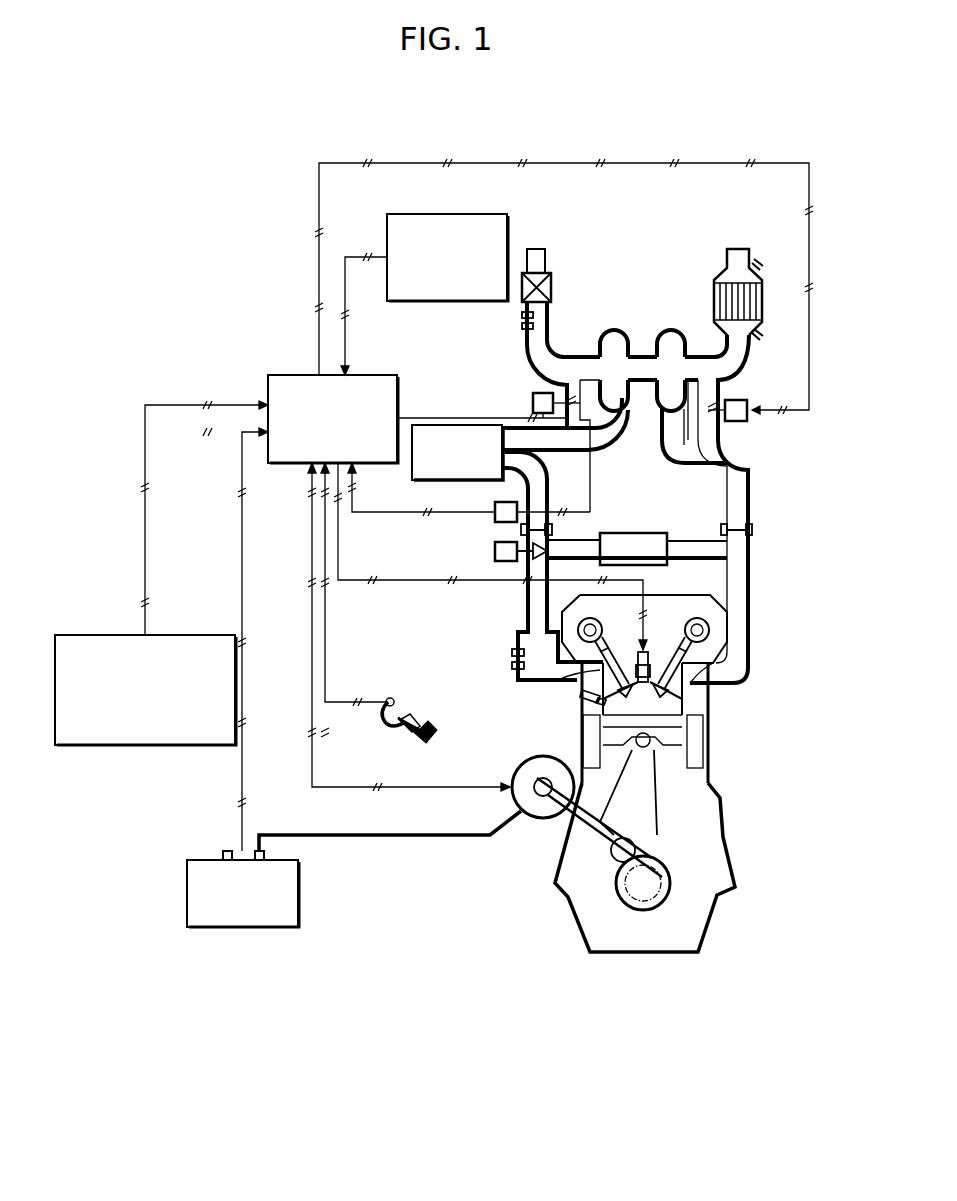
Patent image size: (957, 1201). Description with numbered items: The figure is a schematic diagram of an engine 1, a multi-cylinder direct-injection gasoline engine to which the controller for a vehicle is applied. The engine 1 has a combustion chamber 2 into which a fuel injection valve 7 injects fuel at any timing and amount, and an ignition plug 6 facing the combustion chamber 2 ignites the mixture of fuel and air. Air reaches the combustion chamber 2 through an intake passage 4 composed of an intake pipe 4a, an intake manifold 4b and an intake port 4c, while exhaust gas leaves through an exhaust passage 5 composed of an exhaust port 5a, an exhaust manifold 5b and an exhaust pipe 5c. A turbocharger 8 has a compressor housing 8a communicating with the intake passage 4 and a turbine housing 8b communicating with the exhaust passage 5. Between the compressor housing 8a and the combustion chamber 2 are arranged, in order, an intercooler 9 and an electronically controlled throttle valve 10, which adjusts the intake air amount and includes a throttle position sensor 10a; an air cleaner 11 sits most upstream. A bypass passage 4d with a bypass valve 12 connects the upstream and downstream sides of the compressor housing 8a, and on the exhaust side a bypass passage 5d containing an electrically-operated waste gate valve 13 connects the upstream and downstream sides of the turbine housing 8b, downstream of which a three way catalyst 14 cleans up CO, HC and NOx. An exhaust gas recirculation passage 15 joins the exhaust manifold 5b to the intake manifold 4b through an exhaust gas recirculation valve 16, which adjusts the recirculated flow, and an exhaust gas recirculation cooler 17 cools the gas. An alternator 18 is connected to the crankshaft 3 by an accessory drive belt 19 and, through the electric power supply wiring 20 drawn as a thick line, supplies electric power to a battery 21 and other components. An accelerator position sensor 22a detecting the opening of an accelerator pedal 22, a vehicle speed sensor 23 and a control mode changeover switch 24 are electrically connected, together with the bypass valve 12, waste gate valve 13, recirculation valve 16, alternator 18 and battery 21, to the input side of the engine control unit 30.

The engine 1 is at (797, 142).
The combustion chamber 2 is at (641, 713).
The crankshaft 3 is at (645, 885).
The intake passage 4 is at (522, 608).
The intake pipe 4a is at (549, 325).
The intake manifold 4b is at (516, 670).
The intake port 4c is at (592, 672).
The bypass passage 4d is at (558, 388).
The exhaust passage 5 is at (752, 632).
The exhaust port 5a is at (692, 678).
The exhaust manifold 5b is at (752, 580).
The exhaust pipe 5c is at (753, 345).
The bypass passage 5d is at (700, 428).
The ignition plug 6 is at (651, 640).
The fuel injection valve 7 is at (580, 702).
The turbocharger 8 is at (642, 354).
The compressor housing 8a is at (612, 328).
The turbine housing 8b is at (670, 328).
The intercooler 9 is at (412, 470).
The electronically controlled throttle valve 10 is at (541, 518).
The throttle position sensor 10a is at (495, 514).
The air cleaner 11 is at (552, 277).
The bypass valve 12 is at (533, 403).
The electrically-operated waste gate valve 13 is at (742, 400).
The three way catalyst 14 is at (760, 297).
The exhaust gas recirculation passage 15 is at (686, 540).
The exhaust gas recirculation valve 16 is at (495, 552).
The exhaust gas recirculation cooler 17 is at (660, 533).
The alternator 18 is at (518, 765).
The accessory drive belt 19 is at (575, 838).
The electric power supply wiring 20 is at (406, 840).
The battery 21 is at (210, 857).
The accelerator pedal 22 is at (385, 718).
The accelerator position sensor 22a is at (394, 703).
The vehicle speed sensor 23 is at (432, 214).
The control mode changeover switch 24 is at (206, 747).
The engine control unit 30 is at (376, 375).